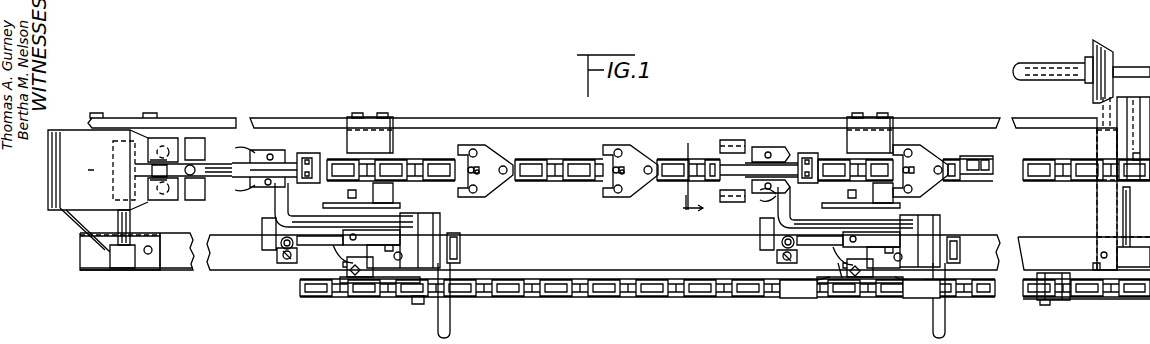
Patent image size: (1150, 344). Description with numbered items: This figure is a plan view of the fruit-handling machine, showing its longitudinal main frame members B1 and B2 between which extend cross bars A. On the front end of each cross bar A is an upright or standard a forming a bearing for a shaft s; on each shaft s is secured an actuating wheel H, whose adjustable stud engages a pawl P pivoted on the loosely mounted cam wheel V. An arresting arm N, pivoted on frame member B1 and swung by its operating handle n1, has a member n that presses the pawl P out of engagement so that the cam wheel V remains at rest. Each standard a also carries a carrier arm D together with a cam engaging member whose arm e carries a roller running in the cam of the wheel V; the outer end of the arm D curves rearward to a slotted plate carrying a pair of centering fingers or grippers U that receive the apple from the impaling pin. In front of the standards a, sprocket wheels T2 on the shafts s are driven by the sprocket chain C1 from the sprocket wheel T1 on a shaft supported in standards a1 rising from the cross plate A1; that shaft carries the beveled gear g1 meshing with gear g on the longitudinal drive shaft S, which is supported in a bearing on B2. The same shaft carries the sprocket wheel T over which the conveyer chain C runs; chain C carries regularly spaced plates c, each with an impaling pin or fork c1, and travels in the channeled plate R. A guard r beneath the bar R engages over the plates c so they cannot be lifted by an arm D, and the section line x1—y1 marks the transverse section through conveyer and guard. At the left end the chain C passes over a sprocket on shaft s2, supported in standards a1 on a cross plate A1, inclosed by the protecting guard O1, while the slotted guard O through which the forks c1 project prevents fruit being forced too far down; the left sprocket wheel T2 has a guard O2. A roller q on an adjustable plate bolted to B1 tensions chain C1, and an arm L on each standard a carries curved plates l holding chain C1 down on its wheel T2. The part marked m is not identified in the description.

The standards a1 is at (154, 134).
The slotted guard O is at (198, 142).
The protecting guard O1 is at (61, 201).
The shaft s2 is at (133, 227).
The cross plate A1 is at (157, 233).
The main frame member B1 is at (220, 266).
The main frame member B2 is at (282, 121).
The centering fingers or grippers U is at (276, 157).
The carrier arm D is at (278, 197).
The member of arresting arm n is at (778, 198).
The cam wheel V is at (307, 221).
The bracket m is at (262, 229).
The cross bars A is at (395, 140).
The actuating wheel H is at (411, 199).
The pawl P is at (430, 217).
The arm e is at (621, 239).
The standard a is at (360, 278).
The sprocket wheel T2 is at (373, 291).
The guard O2 is at (420, 305).
The arresting arm N is at (457, 250).
The operating handle n1 is at (451, 312).
The plate c is at (490, 188).
The impaling pin or fork c1 is at (478, 169).
The guard r is at (733, 145).
The channeled plate R is at (535, 160).
The sprocket chain C is at (985, 176).
The sprocket chain C1 is at (667, 297).
The curved plates l is at (800, 298).
The arm L is at (840, 272).
The section line x1 is at (688, 170).
The section line y1 is at (681, 213).
The shaft S is at (1032, 70).
The beveled gear g is at (1106, 56).
The beveled gear g1 is at (1118, 96).
The sprocket wheel T is at (1115, 181).
The shaft s is at (1133, 227).
The roller q is at (1064, 296).
The sprocket wheel T1 is at (1131, 297).